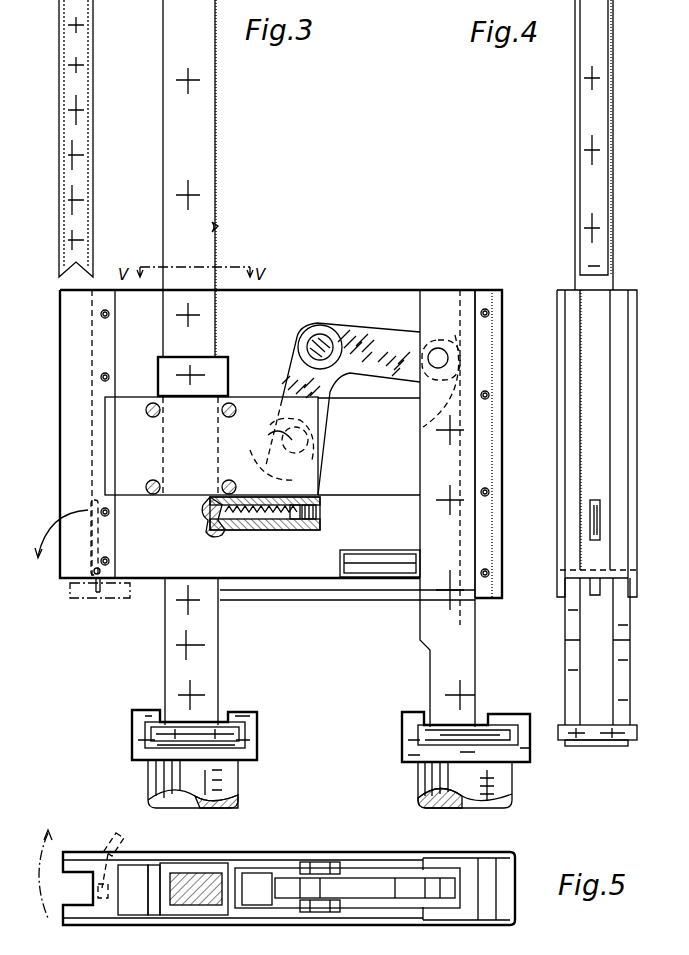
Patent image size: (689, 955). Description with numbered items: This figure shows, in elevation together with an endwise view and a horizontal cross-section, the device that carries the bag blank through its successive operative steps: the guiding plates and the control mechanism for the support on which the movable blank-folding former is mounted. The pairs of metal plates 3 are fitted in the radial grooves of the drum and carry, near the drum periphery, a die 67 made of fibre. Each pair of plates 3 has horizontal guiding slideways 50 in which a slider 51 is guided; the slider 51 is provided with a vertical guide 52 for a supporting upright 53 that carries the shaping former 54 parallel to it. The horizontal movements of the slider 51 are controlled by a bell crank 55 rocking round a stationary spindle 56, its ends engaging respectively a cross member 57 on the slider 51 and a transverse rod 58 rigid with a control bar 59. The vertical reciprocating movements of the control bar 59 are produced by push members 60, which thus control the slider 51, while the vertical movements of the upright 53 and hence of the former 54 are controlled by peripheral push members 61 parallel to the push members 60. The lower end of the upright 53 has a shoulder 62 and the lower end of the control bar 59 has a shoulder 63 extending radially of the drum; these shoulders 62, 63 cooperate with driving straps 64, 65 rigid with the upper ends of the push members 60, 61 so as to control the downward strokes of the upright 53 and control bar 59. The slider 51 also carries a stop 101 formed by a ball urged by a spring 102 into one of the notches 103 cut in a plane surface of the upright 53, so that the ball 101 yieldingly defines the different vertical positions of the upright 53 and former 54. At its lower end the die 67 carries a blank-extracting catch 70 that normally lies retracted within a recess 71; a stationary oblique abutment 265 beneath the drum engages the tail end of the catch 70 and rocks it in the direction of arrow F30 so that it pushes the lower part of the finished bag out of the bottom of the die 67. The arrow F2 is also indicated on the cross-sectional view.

In FIG. 4, the pairs of plates 3 is at (560, 290).
In FIG. 5, the pairs of plates 3 is at (430, 856).
In FIG. 3, the horizontal guiding slideways 50 is at (375, 497).
In FIG. 3, the slider 51 is at (128, 406).
In FIG. 3, the vertical guide 52 is at (225, 362).
In FIG. 3, the supporting upright 53 is at (207, 158).
In FIG. 5, the supporting upright 53 is at (190, 895).
In FIG. 3, the shaping former 54 is at (80, 80).
In FIG. 4, the shaping former 54 is at (603, 214).
In FIG. 3, the bell crank 55 is at (352, 330).
In FIG. 3, the stationary spindle 56 is at (308, 330).
In FIG. 3, the cross member 57 is at (280, 445).
In FIG. 3, the transverse rod 58 is at (438, 348).
In FIG. 3, the control bar 59 is at (477, 630).
In FIG. 4, the control bar 59 is at (622, 688).
In FIG. 3, the push members 60 is at (513, 787).
In FIG. 3, the peripheral push members 61 is at (238, 792).
In FIG. 3, the shoulder 62 is at (245, 731).
In FIG. 4, the shoulder 62 is at (596, 746).
In FIG. 3, the shoulder 63 is at (497, 716).
In FIG. 3, the driving strap 64 is at (412, 712).
In FIG. 3, the driving strap 65 is at (136, 710).
In FIG. 5, the die 67 is at (106, 918).
In FIG. 3, the blank-extracting catch 70 is at (100, 593).
In FIG. 3, the recess 71 is at (88, 555).
In FIG. 4, the recess 71 is at (594, 499).
In FIG. 3, the stop 101 is at (208, 498).
In FIG. 3, the spring 102 is at (278, 532).
In FIG. 3, the notches 103 is at (218, 226).
In FIG. 3, the stationary oblique abutment 265 is at (78, 600).
In FIG. 5, the stationary oblique abutment 265 is at (115, 845).
In FIG. 3, the arrow F-30 F30 is at (55, 548).
In FIG. 5, the force direction F2 is at (53, 856).